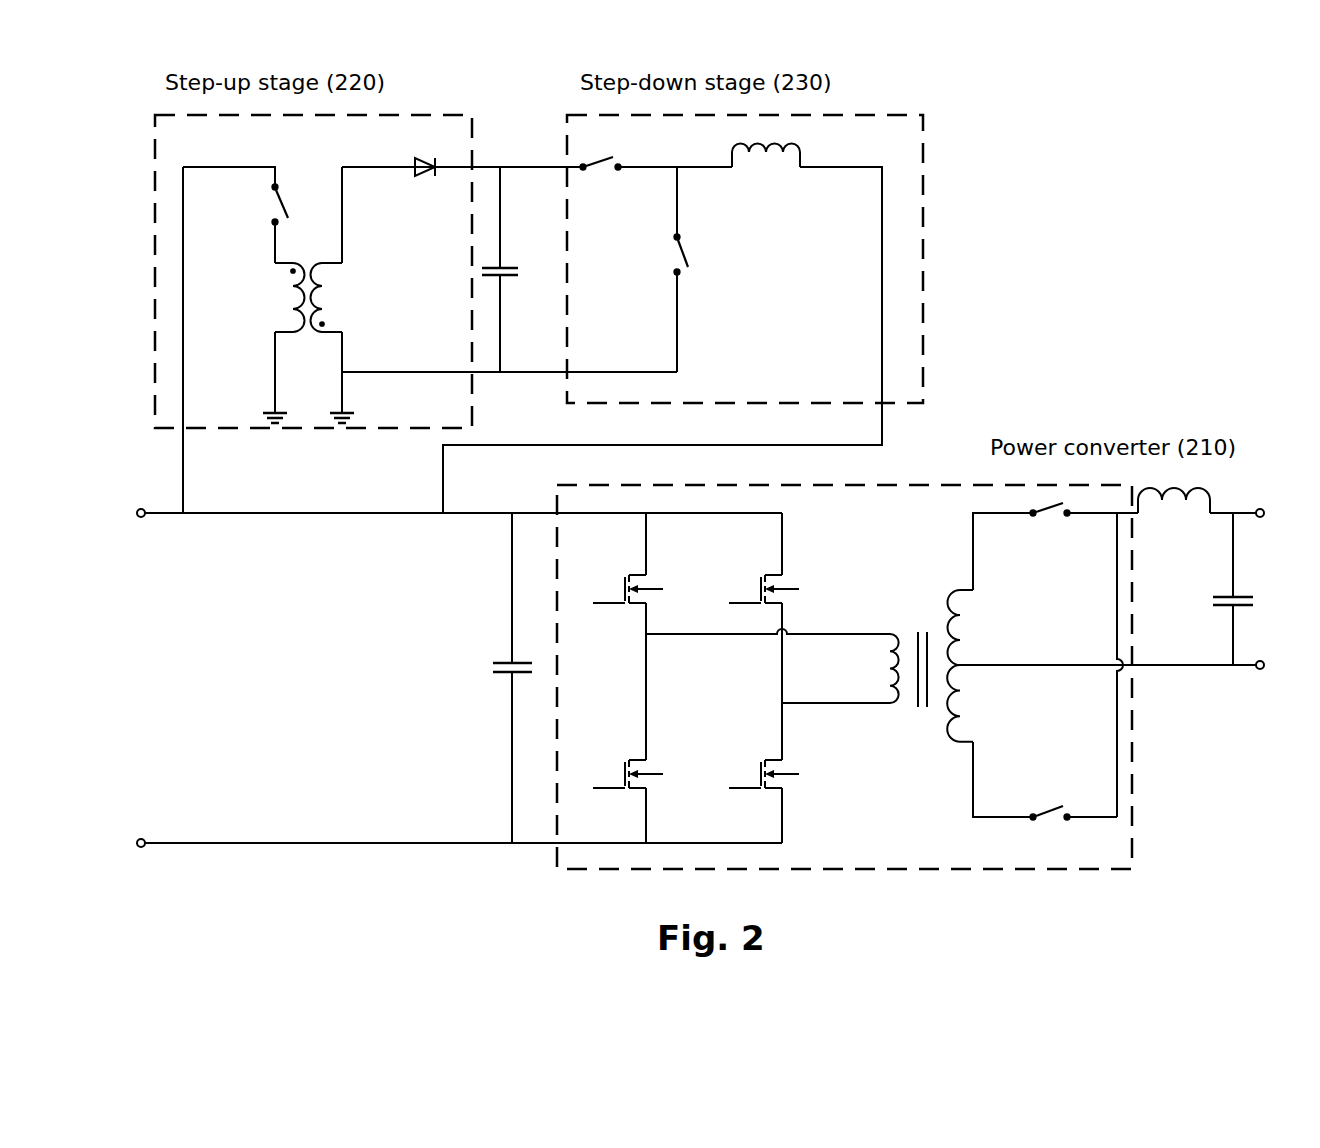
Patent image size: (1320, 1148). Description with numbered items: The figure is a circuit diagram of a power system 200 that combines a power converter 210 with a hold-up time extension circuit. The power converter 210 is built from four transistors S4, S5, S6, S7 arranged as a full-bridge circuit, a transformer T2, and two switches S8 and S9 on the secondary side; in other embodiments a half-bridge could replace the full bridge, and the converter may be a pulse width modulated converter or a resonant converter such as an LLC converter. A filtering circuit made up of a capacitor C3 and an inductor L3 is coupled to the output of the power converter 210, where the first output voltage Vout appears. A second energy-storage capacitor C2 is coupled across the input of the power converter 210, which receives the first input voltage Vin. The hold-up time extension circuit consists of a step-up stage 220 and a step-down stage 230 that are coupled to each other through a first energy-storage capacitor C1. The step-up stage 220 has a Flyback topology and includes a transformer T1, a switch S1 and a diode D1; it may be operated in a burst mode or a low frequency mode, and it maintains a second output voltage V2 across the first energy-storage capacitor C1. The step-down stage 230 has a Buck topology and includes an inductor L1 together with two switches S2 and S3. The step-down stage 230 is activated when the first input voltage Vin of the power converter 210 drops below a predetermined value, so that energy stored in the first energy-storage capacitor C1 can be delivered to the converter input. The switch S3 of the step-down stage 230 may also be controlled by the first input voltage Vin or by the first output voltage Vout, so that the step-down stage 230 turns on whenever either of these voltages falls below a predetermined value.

The power system 200 is at (1134, 214).
The power converter 210 is at (975, 445).
The step-up stage 220 is at (402, 78).
The step-down stage 230 is at (845, 85).
The switch S1 is at (260, 205).
The diode D1 is at (420, 189).
The transformer T1 is at (319, 343).
The first energy-storage capacitor C1 is at (512, 288).
The second output voltage V2 is at (527, 239).
The switch S2 is at (600, 181).
The switch S3 is at (699, 254).
The inductor L1 is at (766, 175).
The first input voltage Vin is at (140, 674).
The second energy-storage capacitor C2 is at (492, 667).
The transistor S4 is at (625, 586).
The transistor S5 is at (762, 586).
The transistor S6 is at (621, 774).
The transistor S7 is at (762, 772).
The transformer T2 is at (931, 665).
The switch S8 is at (1050, 528).
The switch S9 is at (1050, 833).
The inductor L3 is at (1174, 516).
The capacitor C3 is at (1216, 602).
The first output voltage Vout is at (1264, 554).